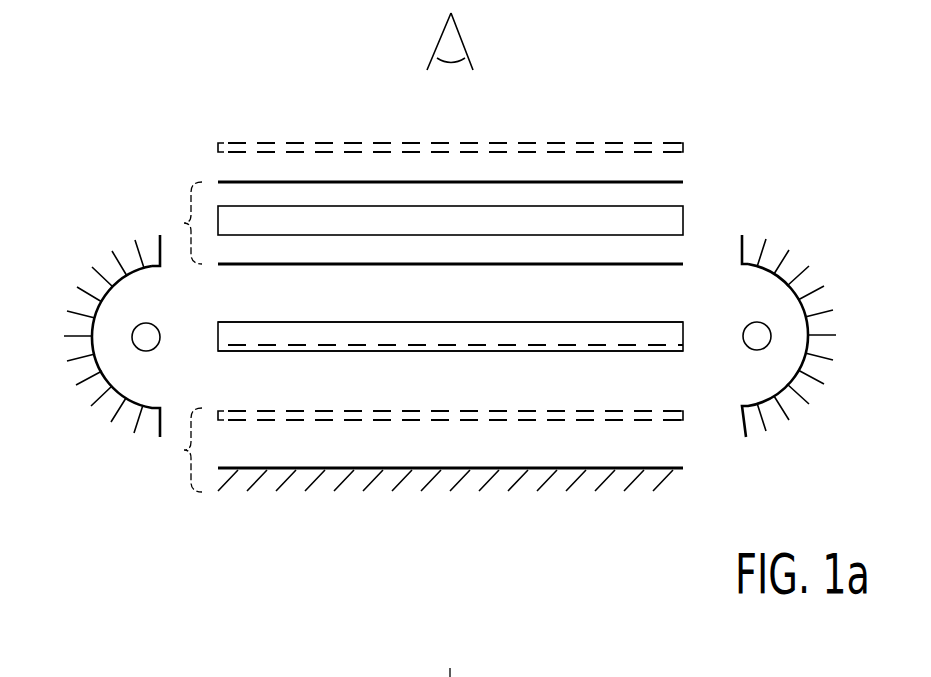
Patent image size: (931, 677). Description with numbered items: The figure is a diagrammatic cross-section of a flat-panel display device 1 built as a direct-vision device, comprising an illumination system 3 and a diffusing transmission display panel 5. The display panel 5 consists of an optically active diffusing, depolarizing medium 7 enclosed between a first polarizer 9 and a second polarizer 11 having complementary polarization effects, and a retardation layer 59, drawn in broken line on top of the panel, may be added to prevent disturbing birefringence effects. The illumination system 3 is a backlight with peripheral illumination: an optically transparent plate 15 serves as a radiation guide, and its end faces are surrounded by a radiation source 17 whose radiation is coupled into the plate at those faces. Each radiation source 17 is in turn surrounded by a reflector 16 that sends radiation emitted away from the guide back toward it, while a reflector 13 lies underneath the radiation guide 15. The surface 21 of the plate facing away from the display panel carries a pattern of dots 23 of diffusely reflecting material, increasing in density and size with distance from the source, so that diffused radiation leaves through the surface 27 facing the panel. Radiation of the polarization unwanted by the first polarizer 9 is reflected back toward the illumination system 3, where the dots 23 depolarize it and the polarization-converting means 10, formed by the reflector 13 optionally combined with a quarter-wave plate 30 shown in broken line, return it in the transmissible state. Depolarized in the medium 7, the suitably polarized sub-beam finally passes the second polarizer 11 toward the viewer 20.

The flat-panel display device 1 is at (130, 545).
The illumination system 3 is at (798, 435).
The diffusing transmission display panel 5 is at (172, 223).
The optically active diffusing, depolarizing medium 7 is at (670, 217).
The first polarizer 9 is at (683, 262).
The polarization-converting means 10 is at (172, 450).
The second polarizer 11 is at (683, 182).
The reflector 13 is at (683, 468).
The optically transparent plate 15 is at (683, 325).
The reflector 16 is at (95, 293).
The radiation source 17 is at (146, 337).
The viewer 20 is at (459, 42).
The surface 21 is at (278, 353).
The pattern of dots 23 is at (333, 348).
The surface 27 is at (283, 320).
The λ/4 plate 30 is at (683, 418).
The retardation layer 59 is at (686, 148).